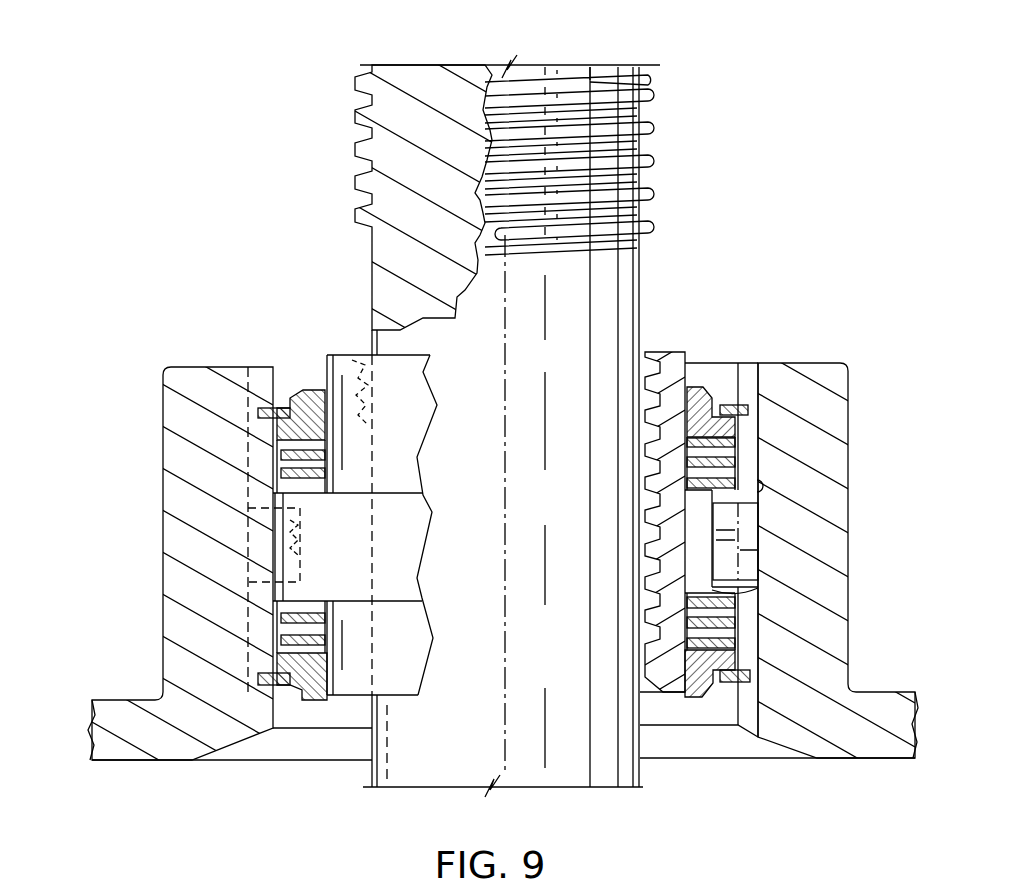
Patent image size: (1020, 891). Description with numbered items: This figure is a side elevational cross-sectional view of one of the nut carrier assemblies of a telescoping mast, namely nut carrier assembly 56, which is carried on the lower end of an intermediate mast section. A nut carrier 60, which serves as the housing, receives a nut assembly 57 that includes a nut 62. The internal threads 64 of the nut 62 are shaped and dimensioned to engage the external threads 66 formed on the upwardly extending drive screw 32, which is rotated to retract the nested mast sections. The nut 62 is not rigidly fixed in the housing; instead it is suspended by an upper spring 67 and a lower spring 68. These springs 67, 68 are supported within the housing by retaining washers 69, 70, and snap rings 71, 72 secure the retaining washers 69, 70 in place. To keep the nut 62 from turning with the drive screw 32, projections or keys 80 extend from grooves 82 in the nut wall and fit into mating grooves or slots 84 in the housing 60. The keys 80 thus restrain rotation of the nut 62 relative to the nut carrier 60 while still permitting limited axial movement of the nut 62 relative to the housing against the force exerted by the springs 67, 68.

The drive screw 32 is at (547, 189).
The external threads 66 is at (657, 128).
The nut 62 is at (676, 350).
The nut assembly 57 is at (718, 365).
The retaining washer 69 is at (703, 403).
The spring 67 is at (730, 462).
The mating grooves or slots 84 is at (757, 492).
The projections or keys 80 is at (750, 527).
The grooves 82 is at (720, 588).
The spring 68 is at (727, 623).
The retaining washer 70 is at (700, 690).
The internal threads 64 is at (645, 503).
The nut carrier assembly 56 is at (165, 484).
The snap ring 71 is at (284, 405).
The nut carrier 60 is at (180, 583).
The snap ring 72 is at (284, 687).